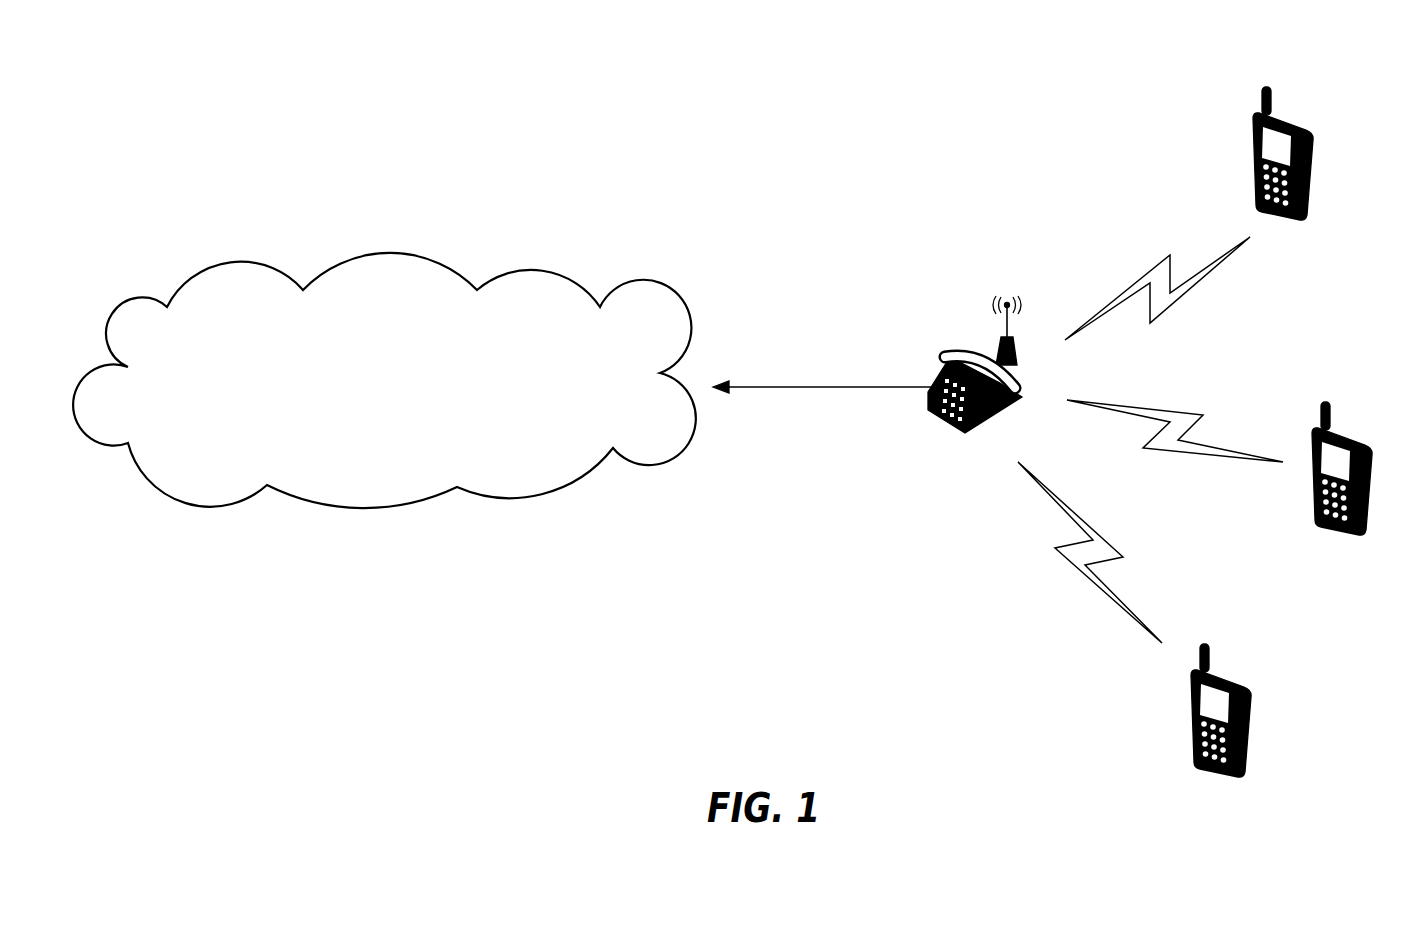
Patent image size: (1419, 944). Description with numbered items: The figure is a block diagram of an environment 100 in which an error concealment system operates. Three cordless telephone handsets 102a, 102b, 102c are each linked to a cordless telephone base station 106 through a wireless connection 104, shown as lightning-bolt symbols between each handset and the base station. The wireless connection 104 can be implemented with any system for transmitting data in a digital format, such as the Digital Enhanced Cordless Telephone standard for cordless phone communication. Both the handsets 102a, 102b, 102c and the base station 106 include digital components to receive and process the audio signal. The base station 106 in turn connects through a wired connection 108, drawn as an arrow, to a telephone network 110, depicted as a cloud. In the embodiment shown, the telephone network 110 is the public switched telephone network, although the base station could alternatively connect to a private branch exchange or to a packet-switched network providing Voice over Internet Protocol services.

The environment 100 is at (480, 680).
The cordless telephone handset 102a is at (1307, 128).
The cordless telephone handset 102b is at (1345, 425).
The cordless telephone handset 102c is at (1247, 680).
The wireless connection 104 is at (1210, 263).
The cordless telephone base station 106 is at (943, 347).
The wired connection 108 is at (780, 387).
The telephone network 110 is at (533, 272).